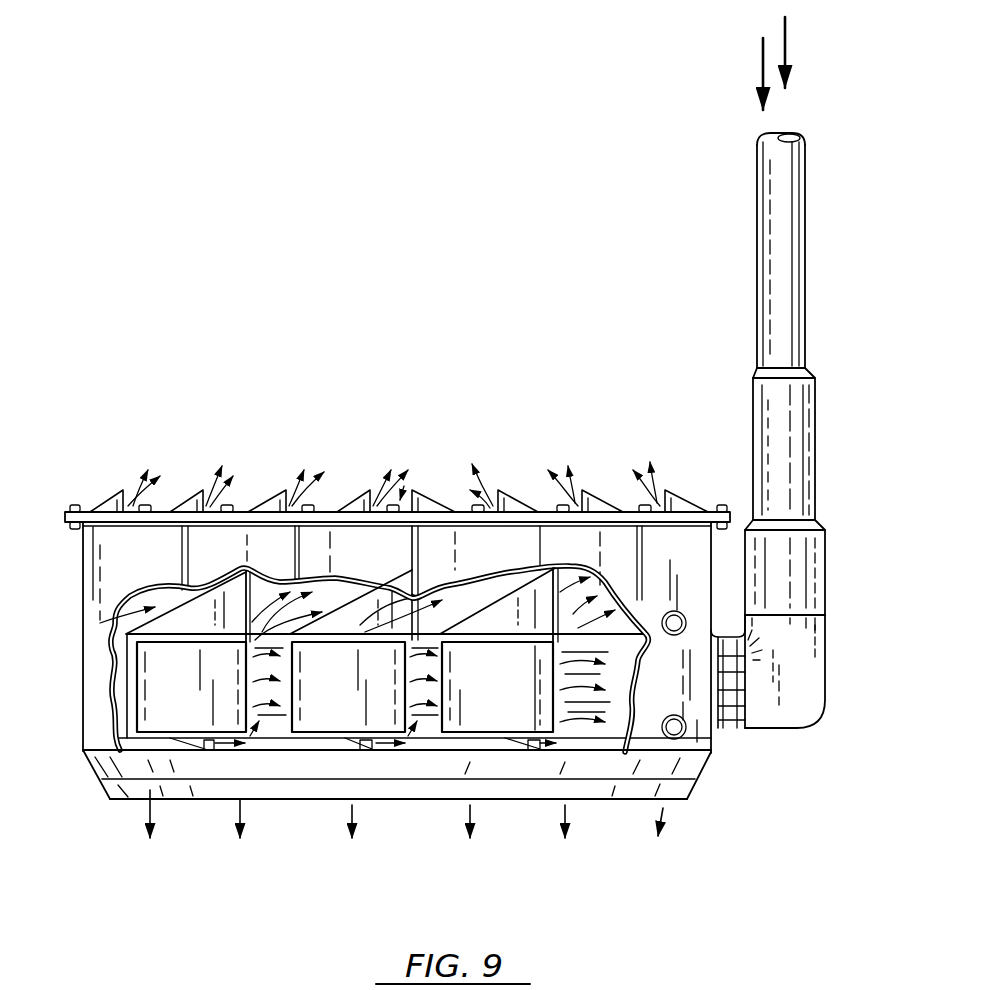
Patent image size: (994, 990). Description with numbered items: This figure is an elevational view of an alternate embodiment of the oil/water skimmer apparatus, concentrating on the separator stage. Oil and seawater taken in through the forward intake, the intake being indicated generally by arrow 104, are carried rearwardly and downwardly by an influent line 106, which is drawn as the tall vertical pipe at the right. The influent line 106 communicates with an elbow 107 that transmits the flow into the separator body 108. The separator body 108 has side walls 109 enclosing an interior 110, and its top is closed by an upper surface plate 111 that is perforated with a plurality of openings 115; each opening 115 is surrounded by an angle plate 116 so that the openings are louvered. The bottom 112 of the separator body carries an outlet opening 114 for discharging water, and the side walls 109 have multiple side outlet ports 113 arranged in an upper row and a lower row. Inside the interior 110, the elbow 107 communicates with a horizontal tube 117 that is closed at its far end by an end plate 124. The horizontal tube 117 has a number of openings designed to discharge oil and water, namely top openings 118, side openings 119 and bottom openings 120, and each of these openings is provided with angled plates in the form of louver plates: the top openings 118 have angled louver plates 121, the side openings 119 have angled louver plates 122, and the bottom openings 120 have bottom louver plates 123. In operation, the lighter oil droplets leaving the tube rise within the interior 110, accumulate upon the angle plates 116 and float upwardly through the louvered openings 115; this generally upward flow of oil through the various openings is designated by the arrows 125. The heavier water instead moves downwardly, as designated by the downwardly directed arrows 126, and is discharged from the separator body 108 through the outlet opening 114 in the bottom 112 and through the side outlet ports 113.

The arrow 104 is at (286, 742).
The influent line 106 is at (792, 250).
The elbow 107 is at (815, 718).
The separator body 108 is at (500, 557).
The side walls 109 is at (130, 540).
The interior 110 is at (115, 622).
The upper surface plate 111 is at (92, 508).
The bottom 112 is at (108, 797).
The side outlet ports 113 is at (681, 632).
The outlet opening 114 is at (430, 803).
The openings 115 is at (124, 488).
The angle plate 116 is at (398, 497).
The horizontal tube 117 is at (568, 733).
The top openings 118 is at (263, 592).
The side openings 119 is at (256, 730).
The bottom openings 120 is at (218, 748).
The louver plates 121 is at (178, 612).
The louver plates 122 is at (196, 684).
The bottom louver plates 123 is at (207, 750).
The end plate 124 is at (100, 698).
The arrows 125 is at (130, 498).
The arrows 126 is at (537, 745).